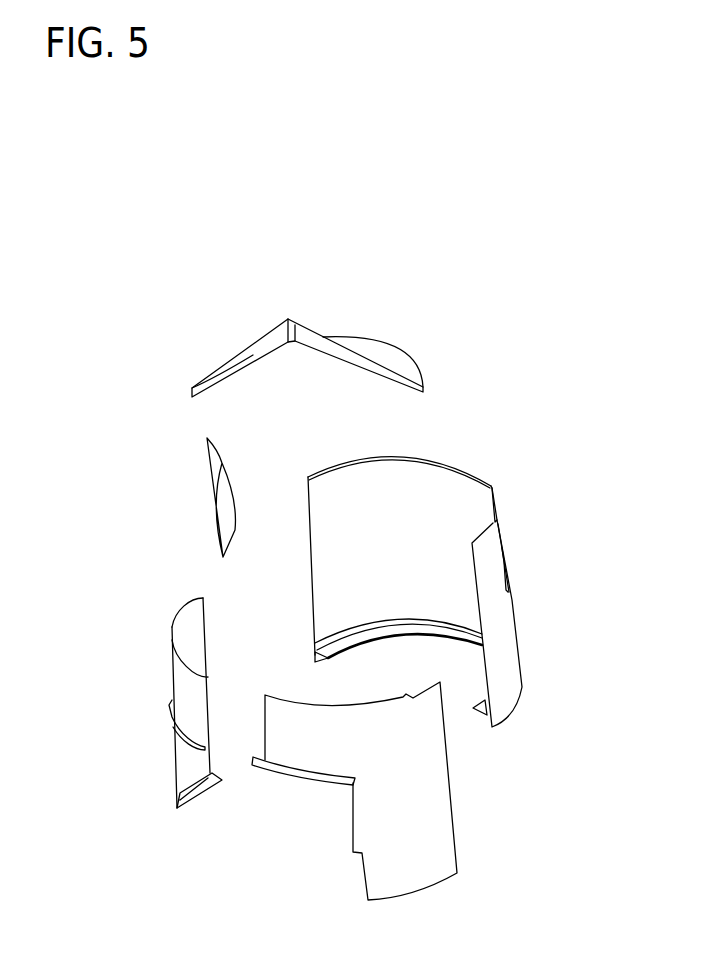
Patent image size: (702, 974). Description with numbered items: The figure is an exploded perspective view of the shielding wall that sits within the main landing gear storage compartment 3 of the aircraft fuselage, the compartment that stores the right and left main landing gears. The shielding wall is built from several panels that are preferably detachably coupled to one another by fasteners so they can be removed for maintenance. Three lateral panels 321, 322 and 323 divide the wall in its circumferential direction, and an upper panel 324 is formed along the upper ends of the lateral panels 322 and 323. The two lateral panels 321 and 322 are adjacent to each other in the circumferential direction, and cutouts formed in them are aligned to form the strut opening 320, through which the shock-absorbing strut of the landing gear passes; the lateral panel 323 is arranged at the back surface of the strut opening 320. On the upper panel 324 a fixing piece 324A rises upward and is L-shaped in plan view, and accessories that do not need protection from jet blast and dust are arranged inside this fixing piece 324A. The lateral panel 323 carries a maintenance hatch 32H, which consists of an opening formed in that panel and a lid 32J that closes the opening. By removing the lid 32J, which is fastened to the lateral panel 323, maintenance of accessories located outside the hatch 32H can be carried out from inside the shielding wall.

The main landing gear storage compartment 3 is at (400, 640).
The strut opening 320 is at (302, 785).
The lateral panel 321 is at (455, 822).
The lateral panel 322 is at (180, 613).
The lateral panel 323 is at (451, 563).
The upper panel 324 is at (390, 350).
The fixing piece 324A is at (250, 353).
The maintenance hatch 32H is at (510, 558).
The lid 32J is at (207, 460).